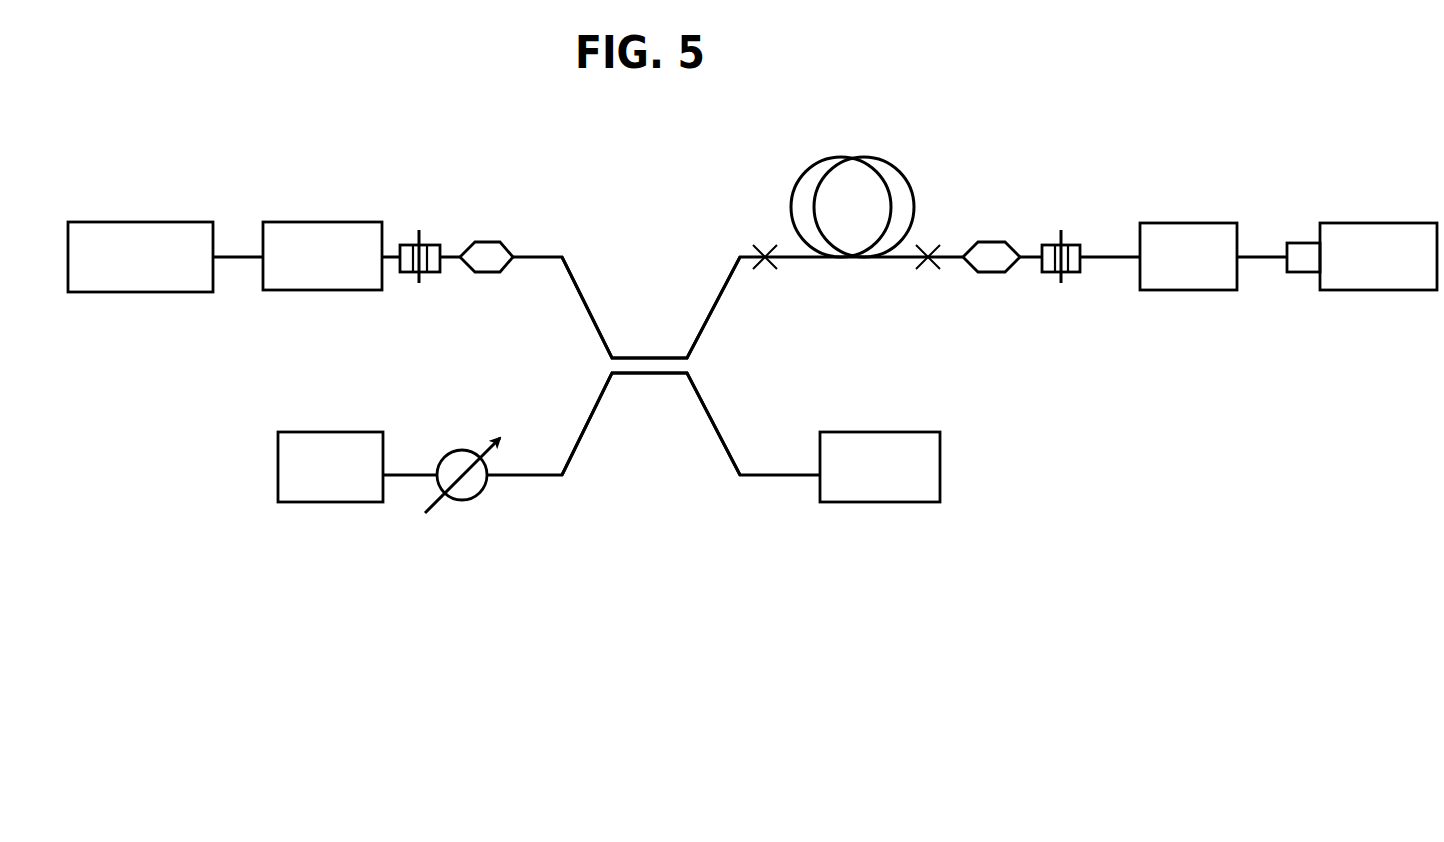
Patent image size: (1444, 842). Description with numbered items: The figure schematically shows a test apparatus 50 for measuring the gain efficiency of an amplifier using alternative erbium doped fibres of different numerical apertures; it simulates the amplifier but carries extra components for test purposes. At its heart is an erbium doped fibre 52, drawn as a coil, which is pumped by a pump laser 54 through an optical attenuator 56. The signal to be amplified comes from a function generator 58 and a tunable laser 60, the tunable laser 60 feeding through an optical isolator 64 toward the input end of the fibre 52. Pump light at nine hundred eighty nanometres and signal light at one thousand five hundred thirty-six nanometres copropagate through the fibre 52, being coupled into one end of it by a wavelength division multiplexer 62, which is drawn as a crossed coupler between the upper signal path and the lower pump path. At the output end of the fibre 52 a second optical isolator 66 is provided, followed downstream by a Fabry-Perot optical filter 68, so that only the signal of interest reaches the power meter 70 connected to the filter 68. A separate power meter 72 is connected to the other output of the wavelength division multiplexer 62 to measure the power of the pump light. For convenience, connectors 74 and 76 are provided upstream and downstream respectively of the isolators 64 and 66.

The test apparatus 50 is at (1052, 470).
The erbium doped fibre 52 is at (792, 192).
The pump laser 54 is at (330, 430).
The optical attenuator 56 is at (450, 452).
The function generator 58 is at (160, 222).
The tunable laser 60 is at (328, 222).
The wavelength division multiplexer 62 is at (686, 448).
The optical isolator 64 is at (486, 273).
The optical isolator 66 is at (990, 273).
The Fabry-Perot optical filter 68 is at (1183, 222).
The power meter 70 is at (1385, 222).
The power meter 72 is at (888, 430).
The connector 74 is at (419, 234).
The connector 76 is at (1061, 234).